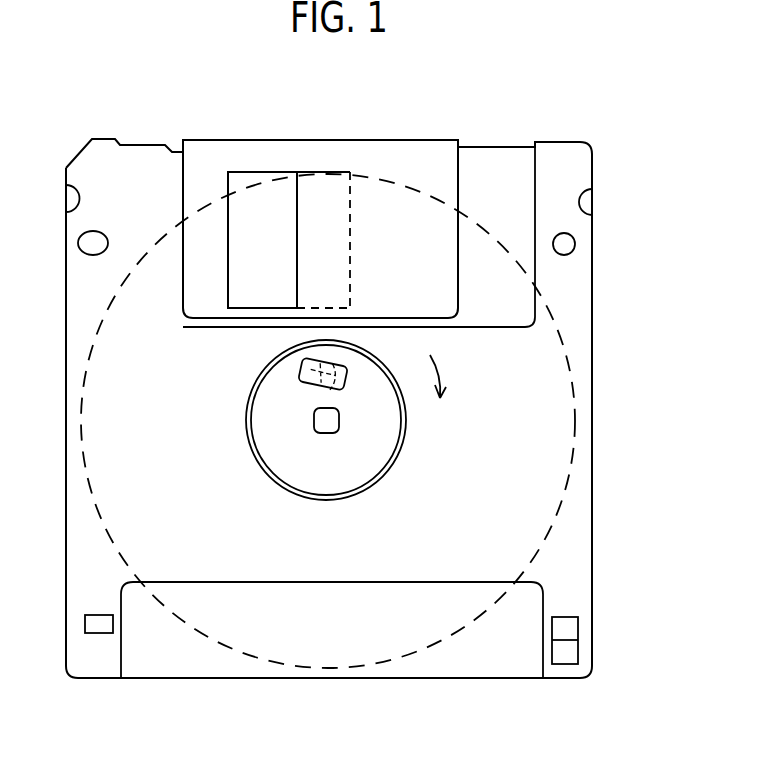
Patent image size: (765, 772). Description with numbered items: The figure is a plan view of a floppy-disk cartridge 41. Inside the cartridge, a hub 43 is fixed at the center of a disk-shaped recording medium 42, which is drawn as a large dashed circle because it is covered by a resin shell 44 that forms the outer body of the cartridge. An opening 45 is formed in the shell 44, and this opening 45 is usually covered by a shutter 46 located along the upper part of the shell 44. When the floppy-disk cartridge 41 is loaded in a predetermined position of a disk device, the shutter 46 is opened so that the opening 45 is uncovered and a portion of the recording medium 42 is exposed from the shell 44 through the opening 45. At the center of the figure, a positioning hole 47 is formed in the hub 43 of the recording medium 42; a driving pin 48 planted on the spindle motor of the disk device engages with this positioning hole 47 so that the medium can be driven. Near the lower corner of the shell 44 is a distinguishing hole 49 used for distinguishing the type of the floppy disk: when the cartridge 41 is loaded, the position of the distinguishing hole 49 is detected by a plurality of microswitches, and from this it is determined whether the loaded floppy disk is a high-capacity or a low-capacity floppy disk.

The floppy-disk cartridge 41 is at (82, 152).
The disk-shaped recording medium 42 is at (577, 423).
The hub 43 is at (353, 460).
The resin shell 44 is at (574, 565).
The opening 45 is at (352, 267).
The shutter 46 is at (205, 303).
The positioning hole 47 is at (300, 385).
The driving pin 48 is at (300, 362).
The distinguishing hole 49 is at (92, 625).